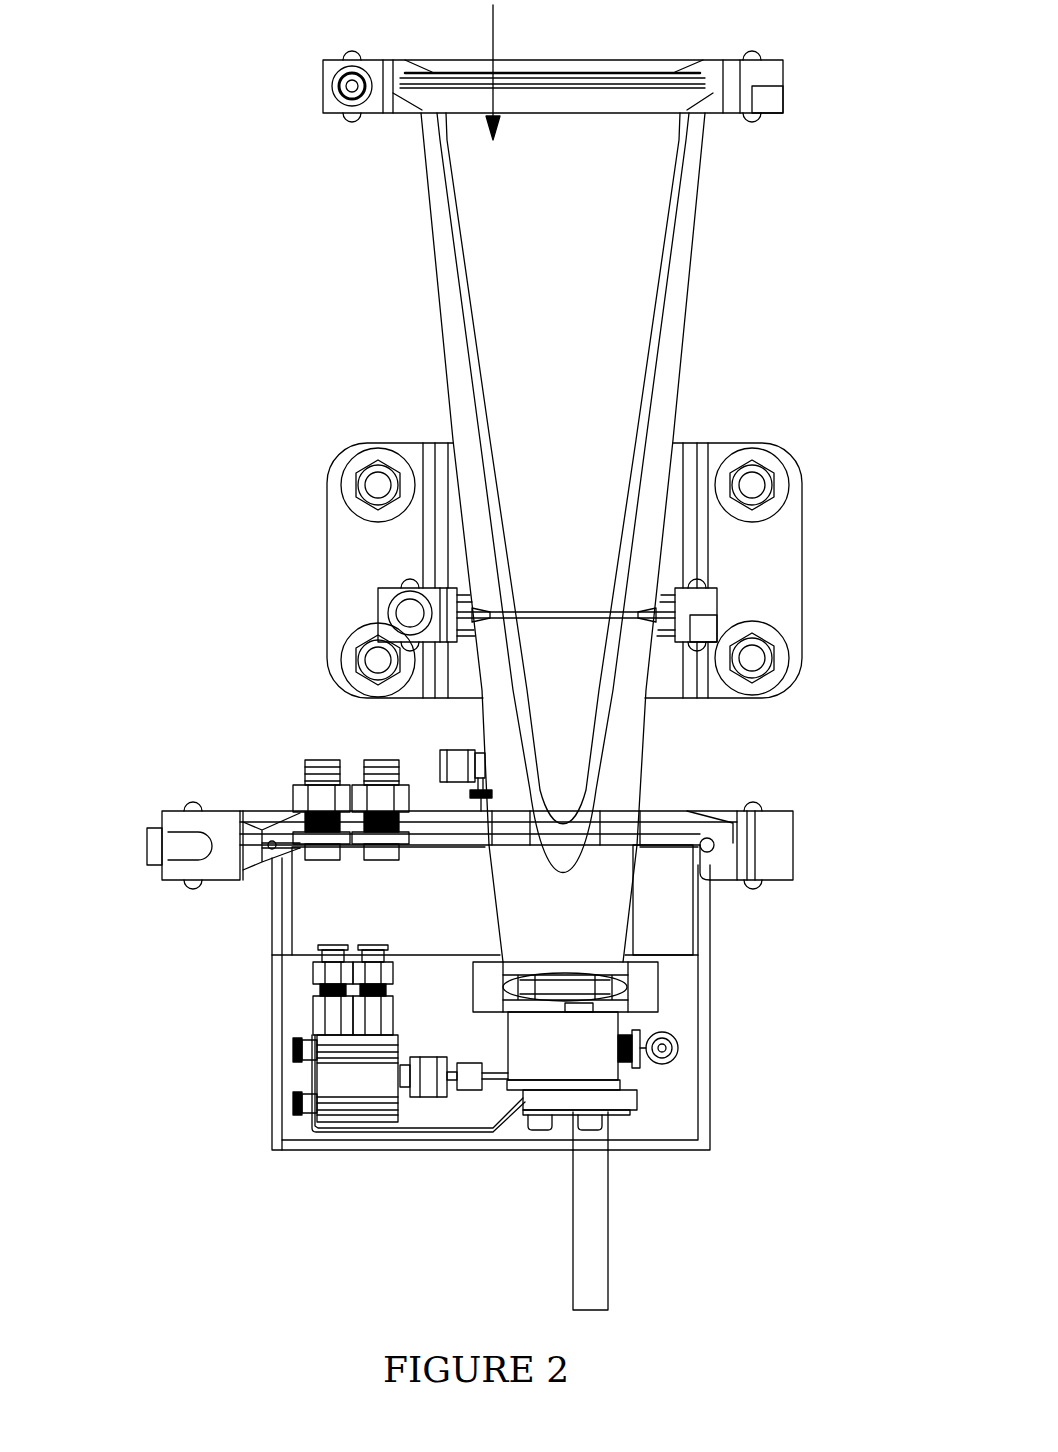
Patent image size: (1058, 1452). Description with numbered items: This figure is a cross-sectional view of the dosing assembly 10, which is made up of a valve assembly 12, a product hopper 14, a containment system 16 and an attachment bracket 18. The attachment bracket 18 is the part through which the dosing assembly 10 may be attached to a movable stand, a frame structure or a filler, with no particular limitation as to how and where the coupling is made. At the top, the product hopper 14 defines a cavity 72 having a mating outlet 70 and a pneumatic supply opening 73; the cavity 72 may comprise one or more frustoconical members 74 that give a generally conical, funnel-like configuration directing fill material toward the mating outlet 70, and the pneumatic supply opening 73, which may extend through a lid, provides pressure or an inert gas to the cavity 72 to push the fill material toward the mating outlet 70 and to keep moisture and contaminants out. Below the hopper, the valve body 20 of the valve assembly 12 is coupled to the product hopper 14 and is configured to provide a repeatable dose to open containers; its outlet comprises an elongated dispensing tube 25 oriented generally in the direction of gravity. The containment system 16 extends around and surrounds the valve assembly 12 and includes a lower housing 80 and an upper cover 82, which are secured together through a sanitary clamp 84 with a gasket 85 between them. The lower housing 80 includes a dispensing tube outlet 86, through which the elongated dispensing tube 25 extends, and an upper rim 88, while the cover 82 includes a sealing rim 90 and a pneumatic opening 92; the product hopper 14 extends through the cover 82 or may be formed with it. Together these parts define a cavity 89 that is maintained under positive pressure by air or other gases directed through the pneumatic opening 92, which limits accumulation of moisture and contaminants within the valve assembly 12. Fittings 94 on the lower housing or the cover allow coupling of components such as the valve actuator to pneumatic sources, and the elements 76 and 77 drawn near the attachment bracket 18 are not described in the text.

The dosing assembly 10 is at (148, 158).
The valve assembly 12 is at (483, 1114).
The product hopper 14 is at (382, 258).
The containment system 16 is at (245, 1008).
The attachment bracket 18 is at (830, 575).
The valve body 20 is at (685, 1026).
The elongated dispensing tube 25 is at (572, 1243).
The mating outlet 70 is at (632, 978).
The cavity 72 is at (578, 393).
The pneumatic supply opening 73 is at (491, 33).
The frustoconical member 74 is at (705, 195).
The tie rod 76 is at (645, 625).
The clamp 77 is at (350, 607).
The lower housing 80 is at (700, 1062).
The upper cover 82 is at (673, 820).
The sanitary clamp 84 is at (122, 842).
The gasket 85 is at (284, 835).
The dispensing tube outlet 86 is at (610, 1150).
The upper rim 88 is at (760, 868).
The cavity 89 is at (475, 917).
The sealing rim 90 is at (708, 836).
The pneumatic opening 92 is at (455, 745).
The fittings 94 is at (312, 880).